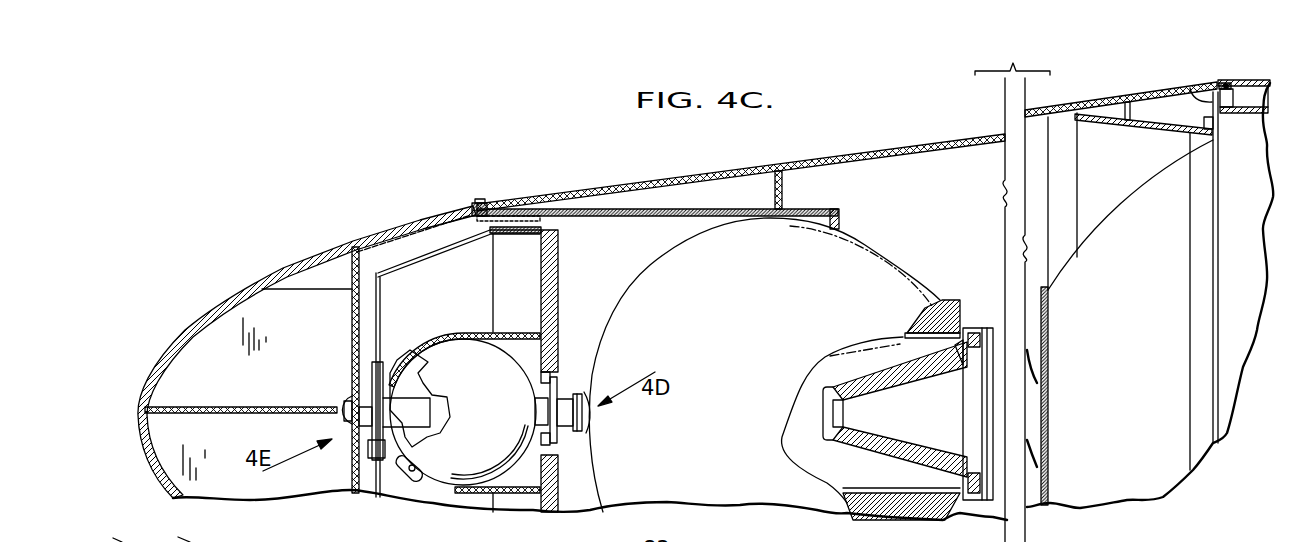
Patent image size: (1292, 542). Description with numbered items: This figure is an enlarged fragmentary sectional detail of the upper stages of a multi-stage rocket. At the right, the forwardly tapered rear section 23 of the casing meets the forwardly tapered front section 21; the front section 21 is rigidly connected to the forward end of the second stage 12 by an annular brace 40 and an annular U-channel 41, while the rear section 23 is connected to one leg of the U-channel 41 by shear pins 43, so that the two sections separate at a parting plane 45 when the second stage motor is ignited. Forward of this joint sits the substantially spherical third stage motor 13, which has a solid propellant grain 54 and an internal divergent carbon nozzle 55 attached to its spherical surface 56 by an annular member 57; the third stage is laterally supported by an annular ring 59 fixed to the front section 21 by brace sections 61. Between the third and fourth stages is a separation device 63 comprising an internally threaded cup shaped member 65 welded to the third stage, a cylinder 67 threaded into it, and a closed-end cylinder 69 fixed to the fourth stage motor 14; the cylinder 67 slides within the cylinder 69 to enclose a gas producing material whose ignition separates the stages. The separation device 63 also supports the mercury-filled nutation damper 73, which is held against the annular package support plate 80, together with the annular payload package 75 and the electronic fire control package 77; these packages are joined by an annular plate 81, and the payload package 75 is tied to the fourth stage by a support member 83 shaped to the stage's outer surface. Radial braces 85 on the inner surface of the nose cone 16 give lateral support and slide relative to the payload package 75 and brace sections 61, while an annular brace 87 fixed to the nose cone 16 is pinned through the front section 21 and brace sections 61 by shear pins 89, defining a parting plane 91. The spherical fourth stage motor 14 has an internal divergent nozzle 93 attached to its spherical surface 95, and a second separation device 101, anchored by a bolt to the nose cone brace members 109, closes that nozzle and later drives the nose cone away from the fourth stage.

The second stage 12 is at (1152, 319).
The third stage motor 13 is at (773, 319).
The fourth stage motor 14 is at (481, 458).
The nose cone 16 is at (313, 259).
The front section 21 is at (862, 152).
The rear section 23 is at (1248, 82).
The annular brace 40 is at (1153, 131).
The annular U-channel 41 is at (1190, 84).
The shear pins 43 is at (1230, 82).
The parting plane 45 is at (1222, 84).
The solid propellant grain 54 is at (917, 311).
The internal divergent carbon nozzle 55 is at (943, 432).
The spherical surface 56 is at (942, 302).
The annular member 57 is at (977, 328).
The annular ring 59 is at (840, 222).
The brace sections 61 is at (776, 184).
The separation device 63 is at (570, 440).
The cup shaped member 65 is at (582, 420).
The cylinder 67 is at (584, 397).
The cylinder 69 is at (535, 413).
The nutation damper 73 is at (557, 392).
The payload package 75 is at (445, 258).
The electronic fire control package 77 is at (559, 267).
The annular package support plate 80 is at (558, 488).
The annular plate 81 is at (541, 281).
The support member 83 is at (489, 332).
The braces 85 is at (397, 238).
The annular brace 87 is at (474, 205).
The shear pins 89 is at (488, 212).
The parting plane 91 is at (481, 200).
The internal divergent nozzle 93 is at (411, 402).
The spherical surface 95 is at (418, 481).
The separation device 101 is at (364, 392).
The nose cone brace members 109 is at (350, 308).